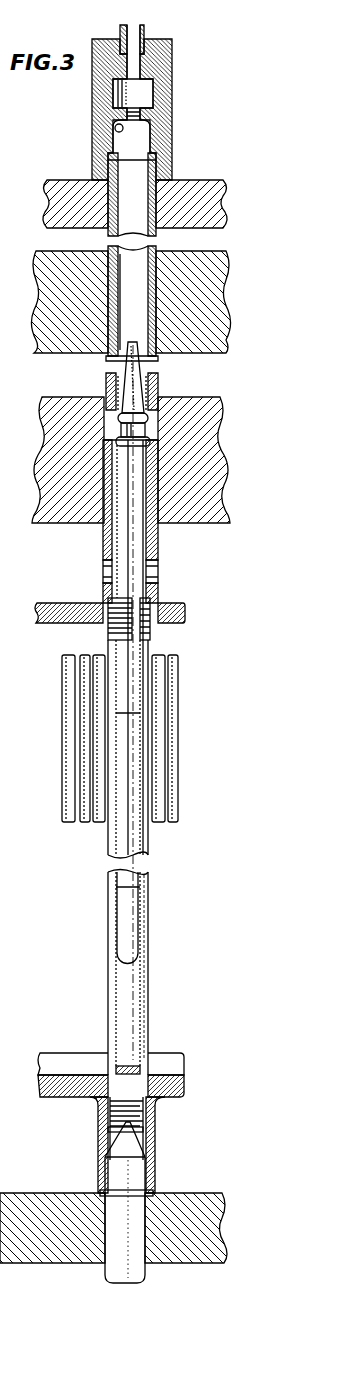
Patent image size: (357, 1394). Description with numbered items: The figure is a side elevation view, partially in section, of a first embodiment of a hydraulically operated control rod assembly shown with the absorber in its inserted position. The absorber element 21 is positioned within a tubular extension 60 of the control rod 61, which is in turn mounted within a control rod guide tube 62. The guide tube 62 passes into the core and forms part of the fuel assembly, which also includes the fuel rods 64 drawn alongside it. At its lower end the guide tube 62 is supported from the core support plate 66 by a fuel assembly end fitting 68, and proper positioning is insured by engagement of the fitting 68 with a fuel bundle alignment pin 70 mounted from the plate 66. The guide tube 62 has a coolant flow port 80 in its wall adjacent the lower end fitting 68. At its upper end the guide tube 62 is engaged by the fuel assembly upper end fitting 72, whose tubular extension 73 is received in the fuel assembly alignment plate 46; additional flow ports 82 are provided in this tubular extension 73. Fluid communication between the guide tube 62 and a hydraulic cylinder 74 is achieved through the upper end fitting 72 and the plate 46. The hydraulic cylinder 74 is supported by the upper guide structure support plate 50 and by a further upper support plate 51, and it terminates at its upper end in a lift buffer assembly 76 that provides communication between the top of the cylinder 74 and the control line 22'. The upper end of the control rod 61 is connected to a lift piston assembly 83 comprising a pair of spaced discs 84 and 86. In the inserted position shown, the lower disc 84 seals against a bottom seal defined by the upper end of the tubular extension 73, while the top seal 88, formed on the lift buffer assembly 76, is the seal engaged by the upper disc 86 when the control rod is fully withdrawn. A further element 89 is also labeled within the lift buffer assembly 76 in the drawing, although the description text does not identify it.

The control line 22' is at (168, 50).
The lift buffer assembly 76 is at (92, 98).
The piston chamber 89 is at (140, 115).
The top seal 88 is at (116, 129).
The further upper support plate 51 is at (197, 183).
The upper guide structure support plate 50 is at (213, 253).
The hydraulic cylinder 74 is at (107, 381).
The upper disc 86 is at (147, 418).
The fuel assembly alignment plate 46 is at (208, 399).
The lift piston assembly 83 is at (120, 432).
The lower disc 84 is at (150, 441).
The tubular extension 73 is at (107, 473).
The flow ports 82 is at (103, 577).
The fuel assembly upper end fitting 72 is at (180, 606).
The control rod 61 is at (133, 651).
The tubular extension of control rod 60 is at (125, 841).
The fuel rods 64 is at (183, 738).
The absorber element 21 is at (125, 916).
The control rod guide tube 62 is at (148, 979).
The coolant flow port 80 is at (148, 1018).
The fuel assembly end fitting 68 is at (183, 1068).
The fuel bundle alignment pin 70 is at (120, 1148).
The core support plate 66 is at (188, 1196).